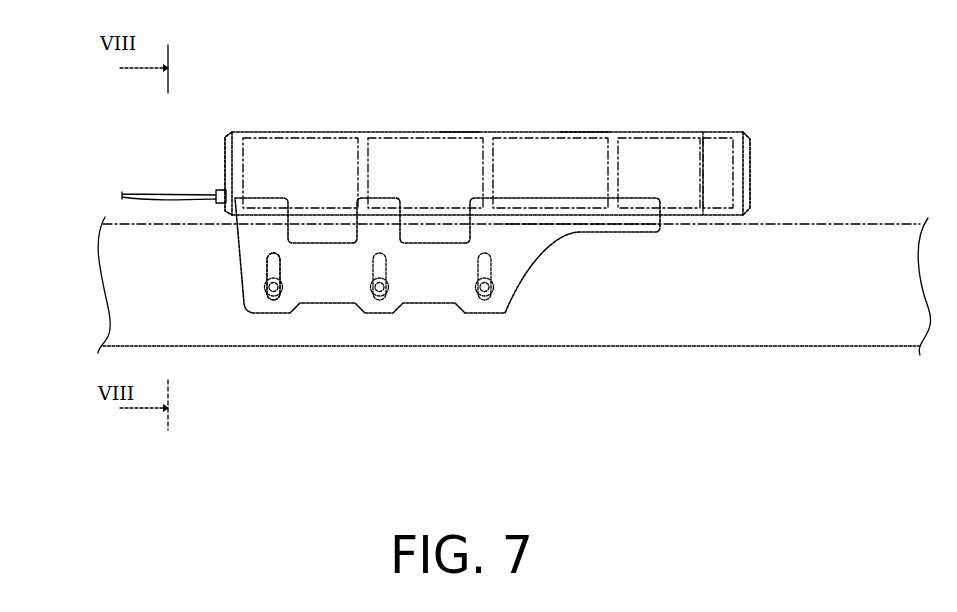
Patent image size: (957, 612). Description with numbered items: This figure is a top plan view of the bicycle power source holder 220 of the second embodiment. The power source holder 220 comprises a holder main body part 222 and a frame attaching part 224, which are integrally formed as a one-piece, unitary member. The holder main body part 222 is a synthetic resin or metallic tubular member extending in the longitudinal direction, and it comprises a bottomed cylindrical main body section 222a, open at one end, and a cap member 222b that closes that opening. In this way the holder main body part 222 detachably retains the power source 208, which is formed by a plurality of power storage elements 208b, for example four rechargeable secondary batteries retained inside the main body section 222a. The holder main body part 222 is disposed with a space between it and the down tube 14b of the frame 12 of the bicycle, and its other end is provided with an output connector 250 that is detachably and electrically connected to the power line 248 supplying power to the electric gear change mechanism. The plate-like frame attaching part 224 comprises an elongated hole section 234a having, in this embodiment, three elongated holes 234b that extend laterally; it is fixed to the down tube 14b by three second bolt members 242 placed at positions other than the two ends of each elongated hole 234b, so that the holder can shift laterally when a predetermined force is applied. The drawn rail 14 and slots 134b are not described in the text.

The frame 12 is at (352, 367).
The roof rail 14 is at (719, 354).
The down tube 14b is at (567, 297).
The mounting slots 134b is at (375, 268).
The power source 208 is at (631, 222).
The power storage elements 208b is at (290, 132).
The power source holder 220 is at (582, 112).
The holder main body part 222 is at (456, 114).
The bottomed cylindrical main body section 222a is at (323, 130).
The cap member 222b is at (722, 132).
The frame attaching part 224 is at (427, 320).
The elongated hole section 234a is at (253, 260).
The elongated hole 234b is at (483, 268).
The second bolt members 242 is at (270, 296).
The power line 248 is at (175, 181).
The output connector 250 is at (223, 190).